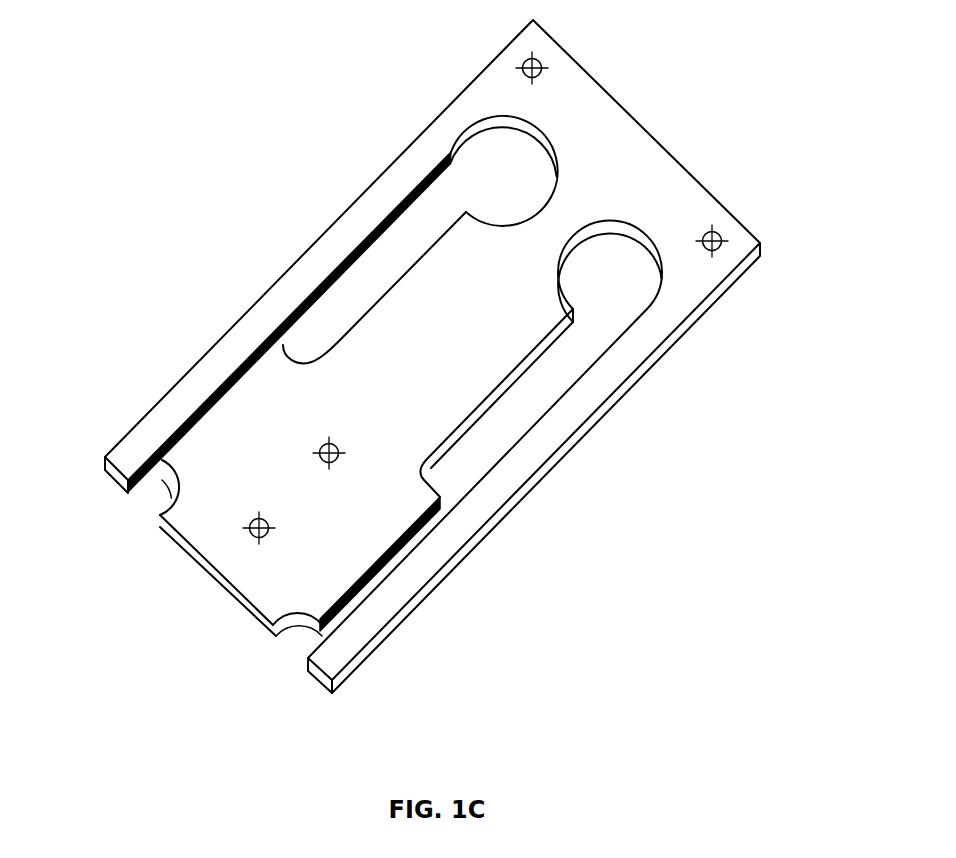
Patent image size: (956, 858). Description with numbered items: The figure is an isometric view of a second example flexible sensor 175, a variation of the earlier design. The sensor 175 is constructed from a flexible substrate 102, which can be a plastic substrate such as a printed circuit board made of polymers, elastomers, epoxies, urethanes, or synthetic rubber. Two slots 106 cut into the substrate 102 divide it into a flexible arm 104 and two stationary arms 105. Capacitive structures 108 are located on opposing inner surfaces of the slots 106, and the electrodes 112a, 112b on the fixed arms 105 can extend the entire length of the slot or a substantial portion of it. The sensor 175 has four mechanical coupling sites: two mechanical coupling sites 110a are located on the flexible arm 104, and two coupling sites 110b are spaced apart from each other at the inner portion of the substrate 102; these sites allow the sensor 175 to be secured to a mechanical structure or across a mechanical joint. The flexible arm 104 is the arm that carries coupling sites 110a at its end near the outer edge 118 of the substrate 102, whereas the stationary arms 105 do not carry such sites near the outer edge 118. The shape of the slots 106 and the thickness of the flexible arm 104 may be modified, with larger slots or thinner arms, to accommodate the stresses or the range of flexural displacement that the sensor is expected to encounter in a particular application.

The flexible substrate 102 is at (685, 167).
The flexible arm 104 is at (341, 521).
The stationary arms 105 is at (208, 368).
The slots 106 is at (499, 201).
The capacitive structures 108 is at (147, 500).
The mechanical coupling sites 110a is at (328, 442).
The mechanical coupling sites 110b is at (533, 78).
The electrodes 112a is at (312, 310).
The right inner wall 112b is at (373, 585).
The outer edge 118 is at (232, 588).
The flexible sensor 175 is at (282, 72).